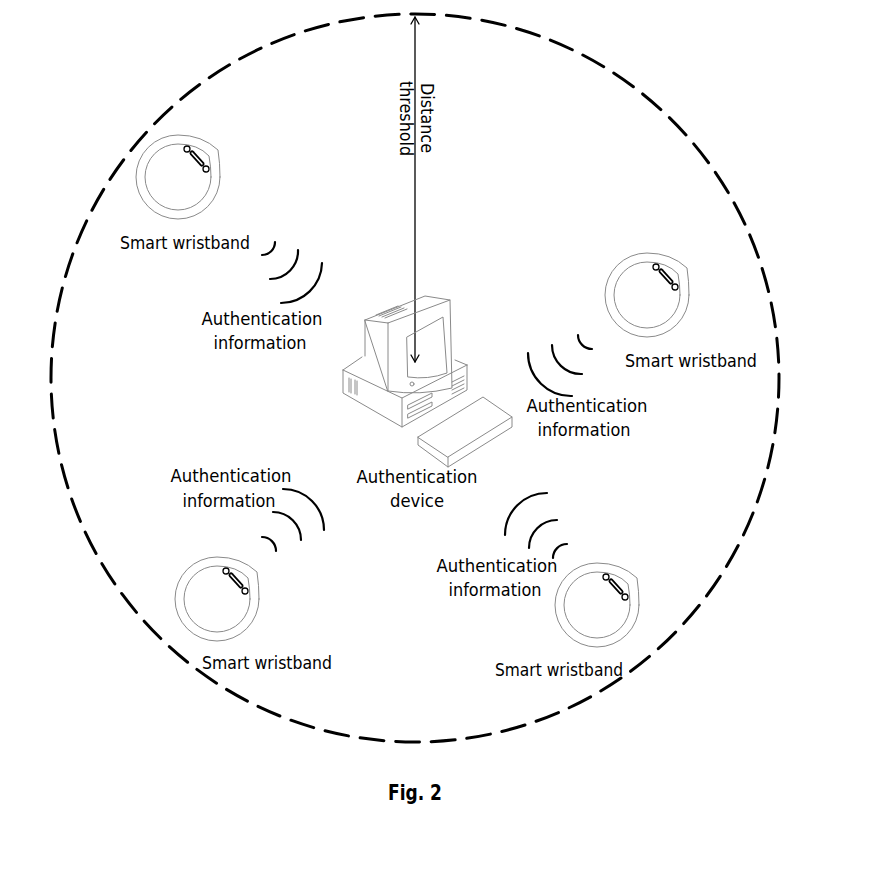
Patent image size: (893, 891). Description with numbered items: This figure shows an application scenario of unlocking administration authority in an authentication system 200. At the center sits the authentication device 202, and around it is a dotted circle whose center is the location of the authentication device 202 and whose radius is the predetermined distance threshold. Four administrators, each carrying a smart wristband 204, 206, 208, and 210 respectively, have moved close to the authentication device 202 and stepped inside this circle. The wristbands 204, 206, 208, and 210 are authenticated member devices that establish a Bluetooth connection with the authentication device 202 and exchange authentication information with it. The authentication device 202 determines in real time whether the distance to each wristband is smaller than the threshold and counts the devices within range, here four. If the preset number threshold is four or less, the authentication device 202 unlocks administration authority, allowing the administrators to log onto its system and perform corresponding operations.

The authentication system 200 is at (96, 31).
The authentication device 202 is at (448, 300).
The smart wristband 204 is at (214, 163).
The smart wristband 206 is at (258, 613).
The smart wristband 208 is at (615, 270).
The smart wristband 210 is at (632, 587).